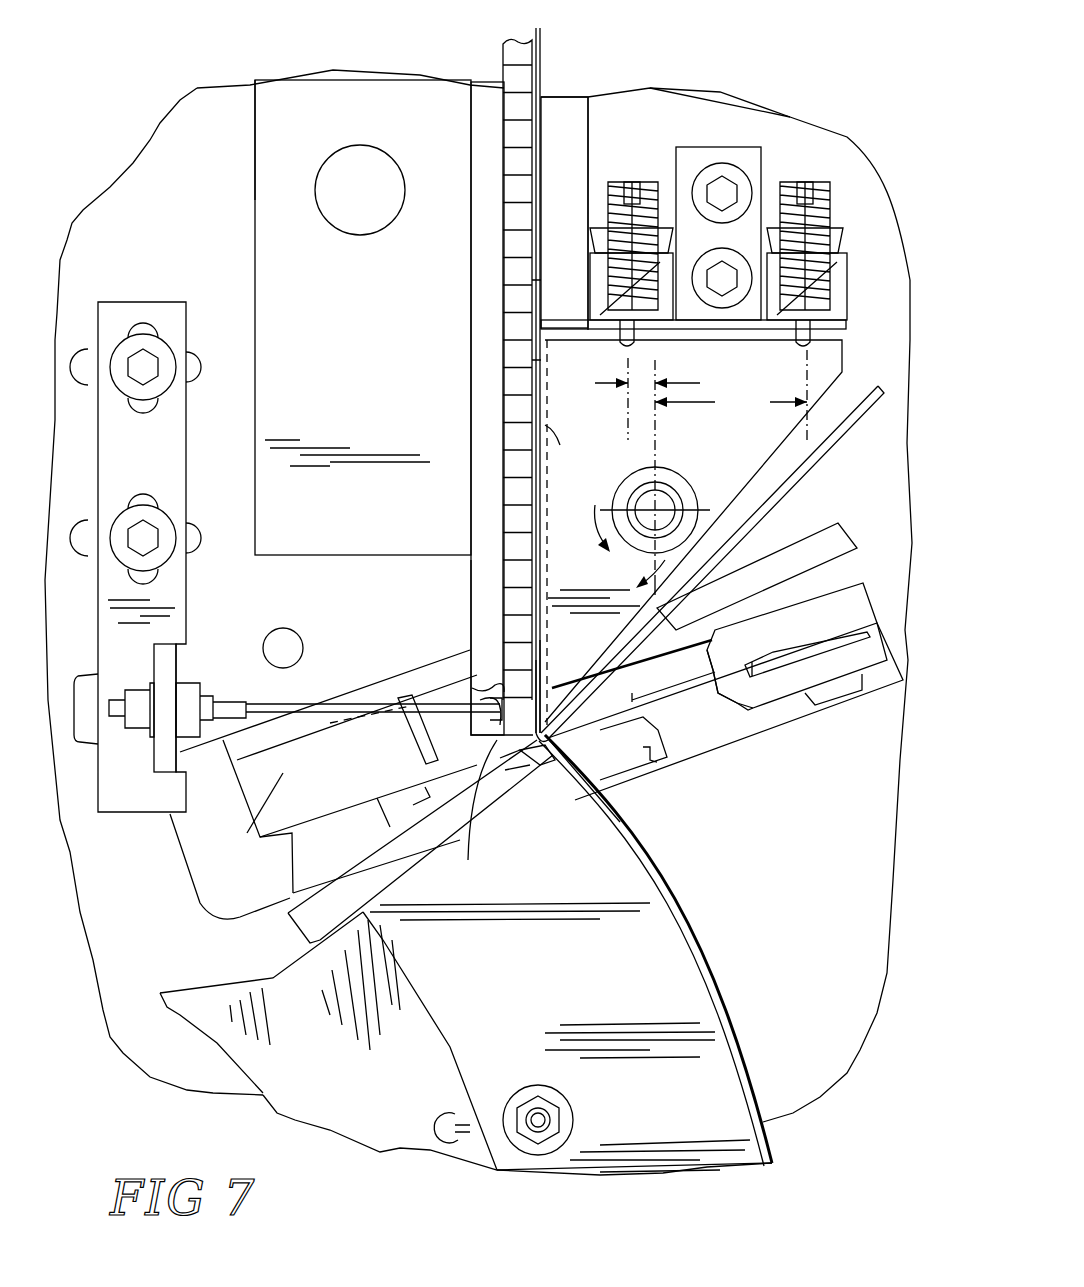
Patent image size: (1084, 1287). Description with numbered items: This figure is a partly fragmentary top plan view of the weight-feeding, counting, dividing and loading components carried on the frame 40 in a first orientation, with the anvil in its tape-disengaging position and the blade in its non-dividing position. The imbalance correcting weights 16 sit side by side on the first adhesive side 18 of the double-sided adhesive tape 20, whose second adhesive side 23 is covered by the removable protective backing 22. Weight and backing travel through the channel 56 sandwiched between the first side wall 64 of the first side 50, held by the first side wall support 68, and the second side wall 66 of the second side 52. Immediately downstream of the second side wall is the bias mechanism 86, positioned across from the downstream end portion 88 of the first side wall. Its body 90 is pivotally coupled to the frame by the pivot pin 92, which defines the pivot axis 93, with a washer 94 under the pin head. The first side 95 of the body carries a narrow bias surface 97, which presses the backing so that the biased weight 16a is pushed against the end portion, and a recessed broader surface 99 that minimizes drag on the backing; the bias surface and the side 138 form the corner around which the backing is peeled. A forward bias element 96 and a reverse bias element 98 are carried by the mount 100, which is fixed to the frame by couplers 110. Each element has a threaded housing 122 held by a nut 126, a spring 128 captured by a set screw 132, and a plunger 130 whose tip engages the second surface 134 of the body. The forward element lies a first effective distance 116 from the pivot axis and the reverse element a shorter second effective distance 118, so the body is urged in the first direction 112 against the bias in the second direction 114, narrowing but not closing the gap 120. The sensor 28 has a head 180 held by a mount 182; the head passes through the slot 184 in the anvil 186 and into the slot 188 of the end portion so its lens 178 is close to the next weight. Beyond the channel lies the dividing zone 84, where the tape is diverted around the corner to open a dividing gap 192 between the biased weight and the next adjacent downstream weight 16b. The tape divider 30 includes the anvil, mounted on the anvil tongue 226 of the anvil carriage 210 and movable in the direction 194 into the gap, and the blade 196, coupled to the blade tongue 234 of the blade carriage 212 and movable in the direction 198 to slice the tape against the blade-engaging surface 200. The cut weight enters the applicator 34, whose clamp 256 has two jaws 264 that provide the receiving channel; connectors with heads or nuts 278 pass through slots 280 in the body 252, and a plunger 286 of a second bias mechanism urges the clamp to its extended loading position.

The frame 40 is at (188, 135).
The first side wall support 68 is at (275, 145).
The first side 50 is at (330, 263).
The first side wall 64 is at (492, 225).
The downstream end portion 88 is at (480, 623).
The slot 188 is at (497, 700).
The channel 56 is at (512, 137).
The individual imbalance correcting weights 16 is at (515, 352).
The double-sided adhesive tape 20 is at (540, 48).
The removable protective backing 22 is at (543, 72).
The second adhesive side 23 is at (640, 775).
The second side wall 66 is at (560, 118).
The second side 52 is at (605, 110).
The bias mechanism 86 is at (705, 120).
The mount 100 is at (740, 155).
The couplers 110 is at (705, 212).
The threaded housing 122 is at (605, 200).
The set screw 132 is at (632, 180).
The reverse bias element 98 is at (645, 183).
The forward bias element 96 is at (838, 190).
The nut 126 is at (600, 238).
The spring 128 is at (608, 270).
The plunger 130 is at (618, 340).
The second surface 134 is at (706, 332).
The body 90 is at (840, 370).
The broader surface 99 is at (550, 470).
The first side 95 is at (552, 435).
The second effective distance 118 is at (669, 464).
The first effective distance 116 is at (731, 395).
The washer 94 is at (668, 490).
The pivot axis 93 is at (675, 500).
The pivot pin 92 is at (638, 505).
The second direction 114 is at (581, 528).
The first direction 112 is at (640, 585).
The side 138 is at (778, 478).
The dividing zone 84 is at (560, 720).
The bias surface 97 is at (543, 700).
The biased weight 16a is at (544, 690).
The blade tongue 234 is at (870, 570).
The blade carriage 212 is at (818, 610).
The direction 198 is at (748, 648).
The blade 196 is at (705, 672).
The blade-engaging surface 200 is at (650, 700).
The tape divider 30 is at (715, 728).
The sensor 28 is at (260, 680).
The mount 182 is at (172, 660).
The head 180 is at (295, 695).
The slot 184 is at (400, 717).
The anvil 186 is at (285, 815).
The anvil tongue 226 is at (265, 810).
The anvil carriage 210 is at (255, 785).
The direction 194 is at (415, 775).
The first adhesive side 18 is at (560, 770).
The next adjacent downstream weight 16b is at (540, 790).
The dividing gap 192 is at (535, 765).
The gap 120 is at (525, 775).
The lens 178 is at (495, 745).
The applicator 34 is at (207, 975).
The body 252 is at (320, 1100).
The slots 280 is at (462, 1112).
The jaws 264 is at (695, 990).
The clamp 256 is at (690, 1123).
The plunger 286 is at (420, 1145).
The head or nut 278 is at (565, 1105).